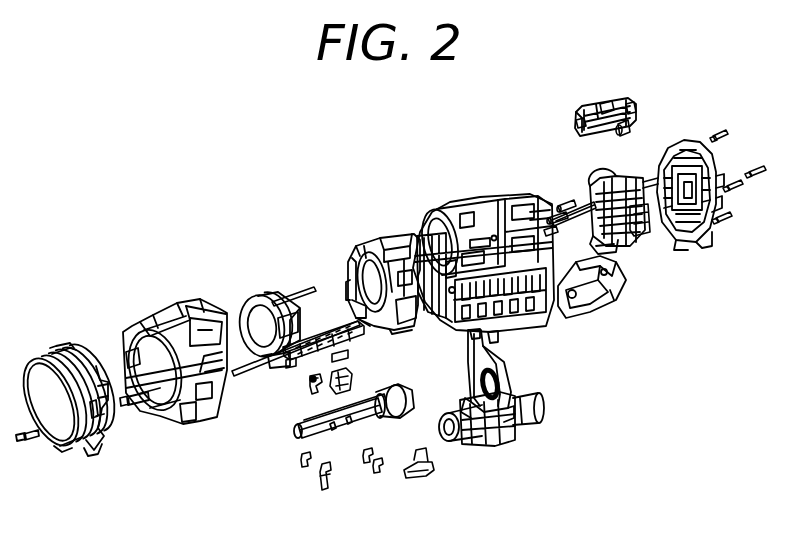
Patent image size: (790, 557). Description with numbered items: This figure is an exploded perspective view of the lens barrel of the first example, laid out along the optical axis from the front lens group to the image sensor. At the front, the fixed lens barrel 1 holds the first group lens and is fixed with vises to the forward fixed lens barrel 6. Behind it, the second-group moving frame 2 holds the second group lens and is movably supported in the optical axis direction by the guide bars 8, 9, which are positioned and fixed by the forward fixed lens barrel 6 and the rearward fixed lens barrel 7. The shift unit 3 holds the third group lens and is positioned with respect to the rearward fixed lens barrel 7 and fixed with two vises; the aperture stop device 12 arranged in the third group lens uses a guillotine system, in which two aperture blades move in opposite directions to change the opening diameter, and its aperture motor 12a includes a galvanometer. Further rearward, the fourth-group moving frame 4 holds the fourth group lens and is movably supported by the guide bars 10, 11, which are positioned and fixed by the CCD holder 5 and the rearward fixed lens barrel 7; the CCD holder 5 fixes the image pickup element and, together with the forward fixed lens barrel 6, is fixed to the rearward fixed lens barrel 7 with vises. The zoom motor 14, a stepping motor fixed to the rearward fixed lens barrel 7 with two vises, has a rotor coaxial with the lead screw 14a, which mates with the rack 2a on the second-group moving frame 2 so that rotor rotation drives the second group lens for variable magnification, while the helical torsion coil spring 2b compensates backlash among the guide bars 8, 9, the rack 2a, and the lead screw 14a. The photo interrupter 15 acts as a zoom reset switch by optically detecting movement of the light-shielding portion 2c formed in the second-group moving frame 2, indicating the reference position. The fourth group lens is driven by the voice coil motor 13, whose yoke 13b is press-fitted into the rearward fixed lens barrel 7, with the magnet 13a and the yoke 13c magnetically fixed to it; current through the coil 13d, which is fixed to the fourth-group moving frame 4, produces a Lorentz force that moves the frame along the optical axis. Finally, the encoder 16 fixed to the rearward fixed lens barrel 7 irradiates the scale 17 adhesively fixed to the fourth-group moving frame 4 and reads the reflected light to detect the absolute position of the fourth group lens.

The fixed lens barrel 1 is at (66, 352).
The second-group moving frame 2 is at (244, 295).
The rack 2a is at (352, 381).
The helical torsion coil spring 2b is at (312, 390).
The light-shielding portion 2c is at (280, 398).
The shift unit 3 is at (348, 250).
The fourth-group moving frame 4 is at (612, 248).
The CCD holder 5 is at (690, 238).
The forward fixed lens barrel 6 is at (166, 307).
The rearward fixed lens barrel 7 is at (448, 206).
The guide bar 8 is at (247, 392).
The guide bar 9 is at (297, 284).
The guide bar 10 is at (546, 206).
The guide bar 11 is at (566, 208).
The aperture stop device 12 is at (466, 354).
The aperture motor 12a is at (462, 442).
The voice coil motor 13 is at (632, 92).
The magnet 13a is at (602, 113).
The yoke 13b is at (578, 122).
The yoke 13c is at (636, 116).
The coil 13d is at (626, 132).
The zoom motor 14 is at (404, 404).
The lead screw 14a is at (335, 440).
The photo interrupter 15 is at (416, 482).
The encoder 16 is at (641, 218).
The scale 17 is at (608, 182).